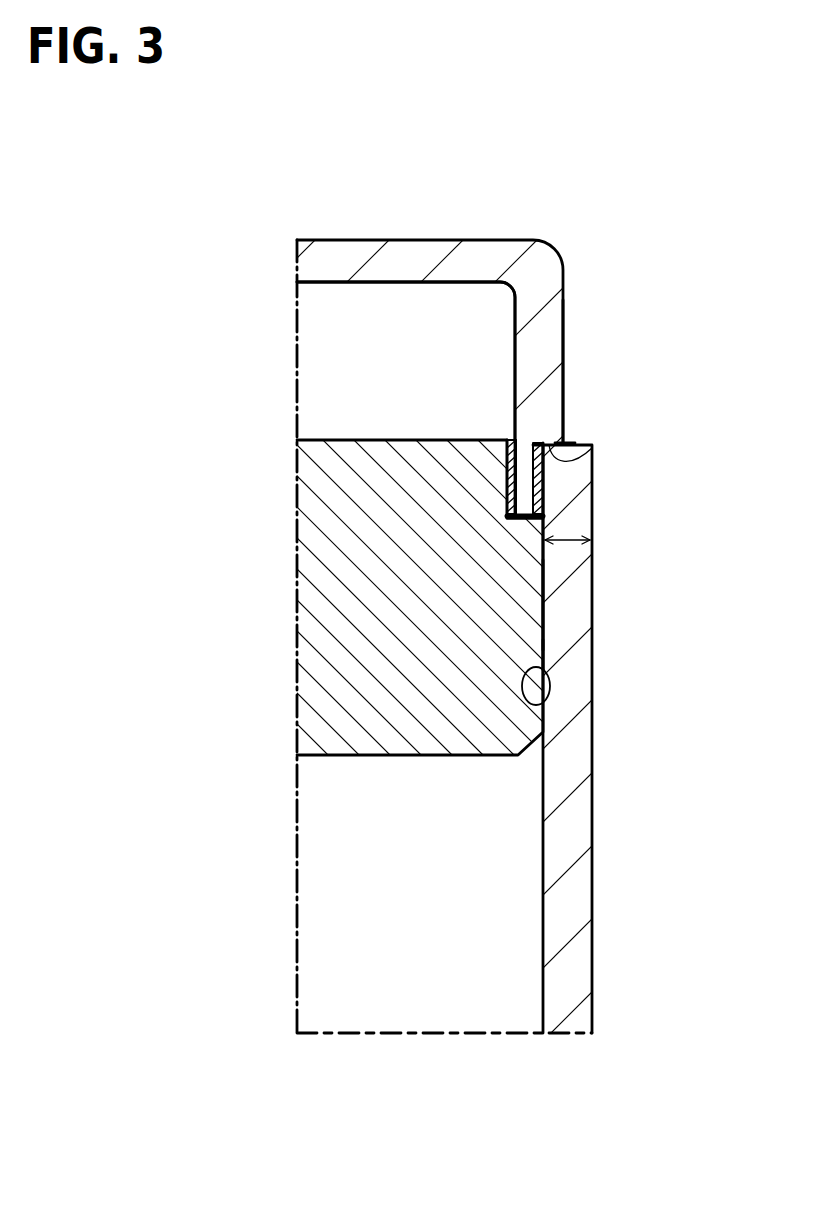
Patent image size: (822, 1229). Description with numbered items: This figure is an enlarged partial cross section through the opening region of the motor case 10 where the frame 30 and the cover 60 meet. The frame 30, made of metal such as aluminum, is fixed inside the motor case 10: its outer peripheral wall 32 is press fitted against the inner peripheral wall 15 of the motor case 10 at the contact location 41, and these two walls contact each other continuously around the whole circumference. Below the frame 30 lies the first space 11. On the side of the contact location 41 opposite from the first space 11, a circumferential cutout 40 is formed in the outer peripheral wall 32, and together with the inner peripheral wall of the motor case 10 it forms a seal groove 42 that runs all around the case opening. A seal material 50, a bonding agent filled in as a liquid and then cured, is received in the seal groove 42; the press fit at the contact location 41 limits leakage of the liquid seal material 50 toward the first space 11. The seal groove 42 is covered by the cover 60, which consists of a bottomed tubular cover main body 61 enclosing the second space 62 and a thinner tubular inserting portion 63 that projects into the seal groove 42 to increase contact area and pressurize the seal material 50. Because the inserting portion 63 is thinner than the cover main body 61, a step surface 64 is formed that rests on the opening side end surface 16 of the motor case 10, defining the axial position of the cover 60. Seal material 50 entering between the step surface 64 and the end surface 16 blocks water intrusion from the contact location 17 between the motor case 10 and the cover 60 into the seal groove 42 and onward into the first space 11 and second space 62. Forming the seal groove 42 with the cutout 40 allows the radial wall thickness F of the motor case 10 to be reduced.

The cover 60 is at (400, 238).
The cover main body 61 is at (546, 293).
The second space 62 is at (421, 372).
The frame 30 is at (360, 640).
The first space 11 is at (423, 905).
The motor case 10 is at (572, 863).
The cutout 40 is at (510, 508).
The inserting portion 63 is at (507, 470).
The seal groove 42 is at (537, 472).
The seal material 50 is at (541, 508).
The step surface 64 is at (592, 445).
The opening side end surface 16 is at (550, 443).
The contact location 17 is at (567, 440).
The contact location 41 is at (546, 611).
The radial wall thickness F is at (567, 554).
The outer peripheral wall 32 is at (545, 658).
The inner peripheral wall 15 is at (545, 703).